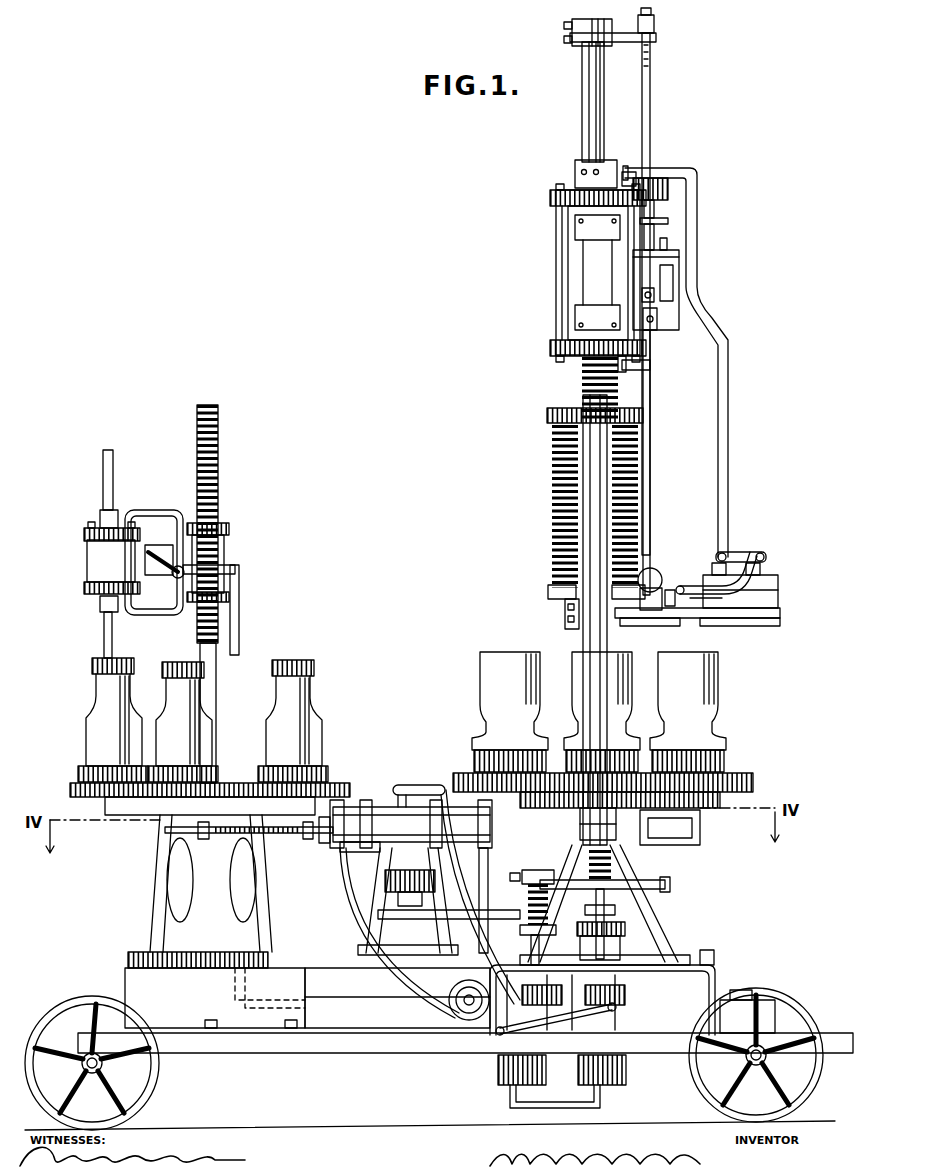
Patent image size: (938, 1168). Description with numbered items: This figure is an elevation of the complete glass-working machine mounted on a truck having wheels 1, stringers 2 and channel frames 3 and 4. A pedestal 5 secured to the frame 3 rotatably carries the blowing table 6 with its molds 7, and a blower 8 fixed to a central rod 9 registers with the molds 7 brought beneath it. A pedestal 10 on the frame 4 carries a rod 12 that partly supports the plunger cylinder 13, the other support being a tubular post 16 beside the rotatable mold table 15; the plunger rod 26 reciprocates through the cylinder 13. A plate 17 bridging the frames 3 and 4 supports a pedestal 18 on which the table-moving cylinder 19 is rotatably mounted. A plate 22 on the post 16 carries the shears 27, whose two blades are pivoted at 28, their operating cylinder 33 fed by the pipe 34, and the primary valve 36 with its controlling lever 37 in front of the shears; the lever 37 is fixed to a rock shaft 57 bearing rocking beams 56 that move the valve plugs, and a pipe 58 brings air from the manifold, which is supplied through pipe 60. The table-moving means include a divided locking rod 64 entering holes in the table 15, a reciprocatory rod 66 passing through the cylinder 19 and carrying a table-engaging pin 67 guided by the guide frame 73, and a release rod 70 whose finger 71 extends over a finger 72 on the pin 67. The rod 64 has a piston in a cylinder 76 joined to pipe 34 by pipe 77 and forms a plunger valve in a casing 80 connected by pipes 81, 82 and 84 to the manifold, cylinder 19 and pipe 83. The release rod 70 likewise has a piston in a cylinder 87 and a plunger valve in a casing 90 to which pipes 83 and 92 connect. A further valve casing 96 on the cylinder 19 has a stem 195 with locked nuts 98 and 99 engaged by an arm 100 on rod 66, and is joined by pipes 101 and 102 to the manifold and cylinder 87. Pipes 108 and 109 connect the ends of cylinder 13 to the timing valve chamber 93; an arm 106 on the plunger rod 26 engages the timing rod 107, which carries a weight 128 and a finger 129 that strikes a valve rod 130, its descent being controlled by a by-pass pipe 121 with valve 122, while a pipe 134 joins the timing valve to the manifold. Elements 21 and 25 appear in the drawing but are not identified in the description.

The wheels 1 is at (159, 1096).
The stringers 2 is at (356, 1050).
The channel frame 3 is at (123, 975).
The channel frame 4 is at (716, 966).
The pedestal 5 is at (157, 882).
The blowing table 6 is at (68, 790).
The molds 7 is at (320, 710).
The blower 8 is at (92, 564).
The central rod 9 is at (222, 470).
The pedestal 10 is at (645, 930).
The rod 12 is at (592, 644).
The plunger cylinder 13 is at (554, 280).
The rotatable mold table 15 is at (755, 781).
The tubular post 16 is at (579, 620).
The plate 17 is at (342, 970).
The pedestal 18 is at (390, 925).
The table-moving cylinder 19 is at (372, 803).
The plate 21 is at (756, 622).
The plate 22 is at (692, 619).
The bottles 25 is at (719, 700).
The plunger rod 26 is at (585, 110).
The shears 27 is at (672, 620).
The pivot 28 is at (676, 592).
The operating cylinder 33 is at (656, 577).
The pipe 34 is at (648, 498).
The primary valve 36 is at (779, 592).
The controlling lever 37 is at (722, 594).
The rocking beams 56 is at (736, 554).
The rock shaft 57 is at (761, 558).
The pipe 58 is at (728, 460).
The pipe 60 is at (472, 1022).
The locking rod 64 is at (650, 900).
The reciprocatory rod 66 is at (522, 826).
The table-engaging pin 67 is at (660, 862).
The release rod 70 is at (531, 898).
The finger 71 is at (560, 880).
The finger 72 is at (671, 883).
The guide frame 73 is at (700, 847).
The cylinder 76 is at (642, 942).
The pipe 77 is at (632, 915).
The casing 80 is at (605, 1030).
The pipe 81 is at (565, 1032).
The pipe 82 is at (489, 857).
The pipe 83 is at (340, 882).
The pipe 84 is at (602, 1086).
The cylinder 87 is at (534, 926).
The casing 90 is at (500, 1080).
The pipe 92 is at (592, 1066).
The timing valve chamber 93 is at (675, 281).
The casing 96 is at (372, 855).
The locked nut 98 is at (330, 845).
The locked nut 99 is at (210, 840).
The arm 100 is at (318, 850).
The pipe 101 is at (428, 797).
The pipe 102 is at (388, 893).
The arm 106 is at (656, 38).
The rod 107 is at (650, 80).
The pipe 108 is at (632, 176).
The pipe 109 is at (651, 358).
The by-pass pipe 121 is at (658, 318).
The controlling valve 122 is at (656, 296).
The weight 128 is at (669, 190).
The finger 129 is at (669, 222).
The valve rod 130 is at (668, 244).
The pipe 134 is at (680, 258).
The stem 195 is at (283, 840).